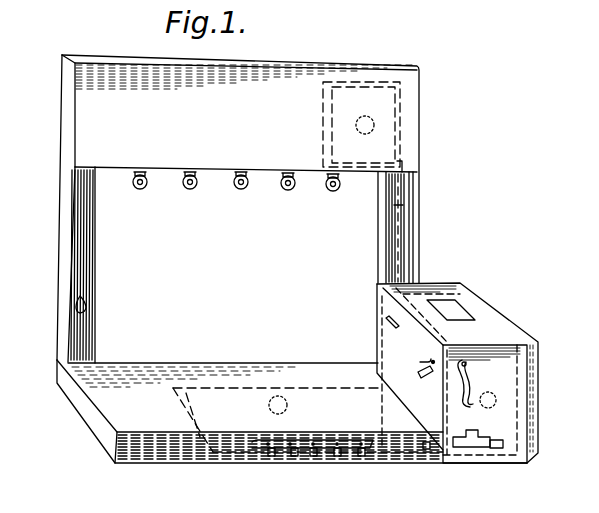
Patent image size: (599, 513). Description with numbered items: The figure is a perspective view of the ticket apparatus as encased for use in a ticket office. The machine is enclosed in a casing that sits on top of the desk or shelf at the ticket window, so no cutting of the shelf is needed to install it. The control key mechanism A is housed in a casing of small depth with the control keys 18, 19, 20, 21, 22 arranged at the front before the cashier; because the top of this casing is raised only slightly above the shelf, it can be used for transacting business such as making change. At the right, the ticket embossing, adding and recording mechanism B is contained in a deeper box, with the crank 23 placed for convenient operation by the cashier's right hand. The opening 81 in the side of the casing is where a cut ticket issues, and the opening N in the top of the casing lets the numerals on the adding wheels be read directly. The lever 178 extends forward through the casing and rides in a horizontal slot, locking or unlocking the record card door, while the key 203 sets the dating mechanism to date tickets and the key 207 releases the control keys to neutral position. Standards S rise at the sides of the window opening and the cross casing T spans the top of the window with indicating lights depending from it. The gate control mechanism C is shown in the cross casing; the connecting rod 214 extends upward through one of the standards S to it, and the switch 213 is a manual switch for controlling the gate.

The cross casing T is at (238, 69).
The standards S is at (58, 240).
The connecting rod 214 is at (420, 204).
The switch 213 is at (88, 306).
The gate control mechanism C is at (362, 127).
The control key mechanism A is at (292, 411).
The ticket embossing, adding and recording mechanism B is at (457, 373).
The opening N is at (450, 312).
The opening 81 is at (385, 321).
The key 203 is at (410, 360).
The crank 23 is at (462, 404).
The lever 178 is at (504, 445).
The key 207 is at (427, 450).
The control key 18 is at (271, 457).
The control key 19 is at (294, 457).
The control key 20 is at (313, 457).
The control key 21 is at (337, 457).
The control key 22 is at (361, 457).